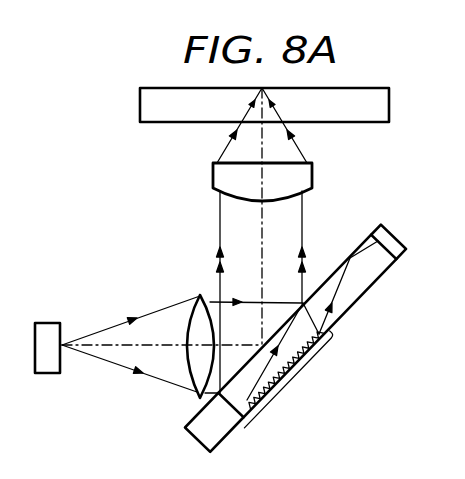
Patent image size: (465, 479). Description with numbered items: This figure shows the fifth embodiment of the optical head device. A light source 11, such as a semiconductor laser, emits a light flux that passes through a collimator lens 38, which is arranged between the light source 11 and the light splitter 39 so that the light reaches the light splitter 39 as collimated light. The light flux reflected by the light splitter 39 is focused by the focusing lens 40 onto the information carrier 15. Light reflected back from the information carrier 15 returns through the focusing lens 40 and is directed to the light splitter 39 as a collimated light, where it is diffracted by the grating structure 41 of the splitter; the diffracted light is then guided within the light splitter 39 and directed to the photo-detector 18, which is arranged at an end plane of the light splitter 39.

The light source 11 is at (45, 322).
The information carrier 15 is at (389, 105).
The photo-detector 18 is at (393, 233).
The collimator lens 38 is at (199, 294).
The light splitter 39 is at (198, 440).
The focusing lens 40 is at (212, 170).
The grating coupler 41 is at (291, 379).